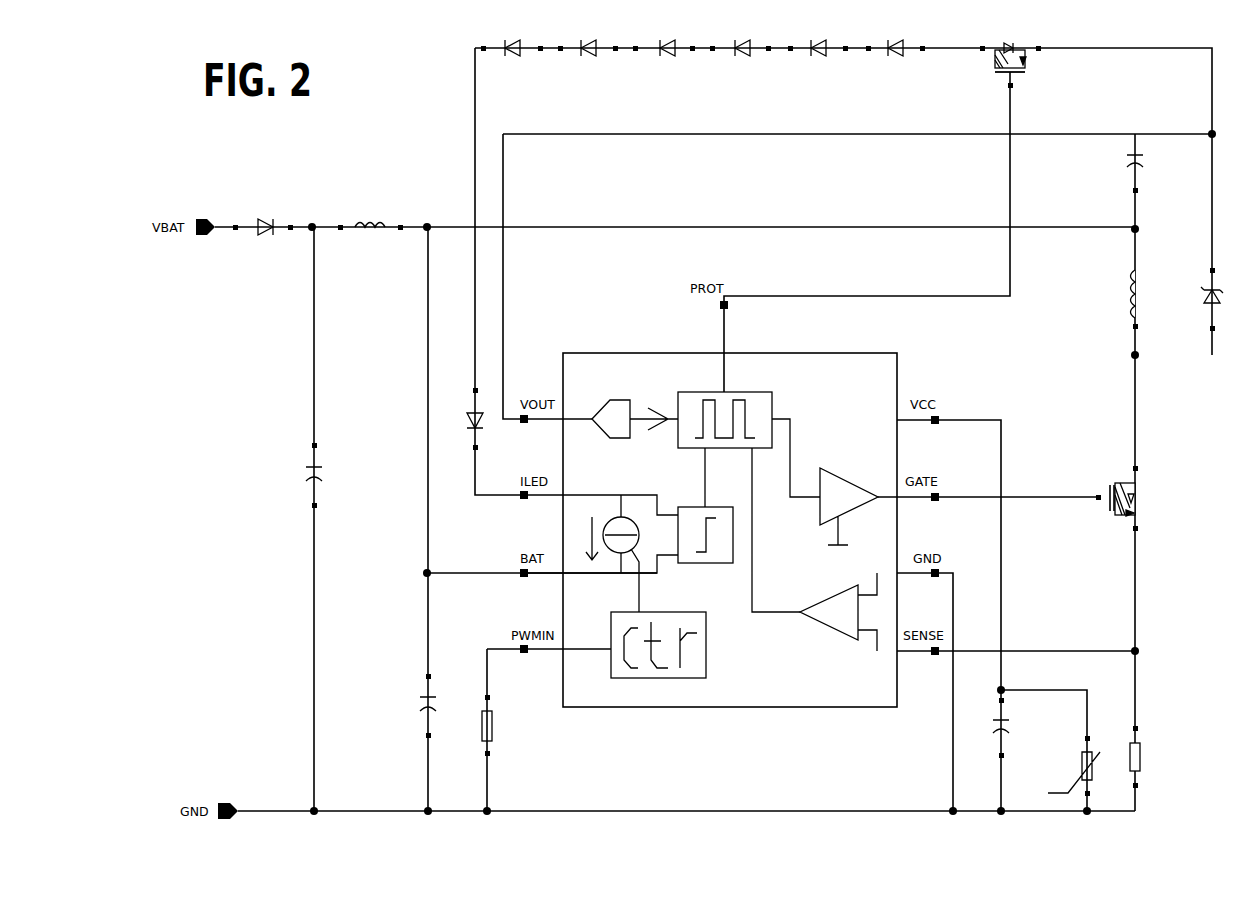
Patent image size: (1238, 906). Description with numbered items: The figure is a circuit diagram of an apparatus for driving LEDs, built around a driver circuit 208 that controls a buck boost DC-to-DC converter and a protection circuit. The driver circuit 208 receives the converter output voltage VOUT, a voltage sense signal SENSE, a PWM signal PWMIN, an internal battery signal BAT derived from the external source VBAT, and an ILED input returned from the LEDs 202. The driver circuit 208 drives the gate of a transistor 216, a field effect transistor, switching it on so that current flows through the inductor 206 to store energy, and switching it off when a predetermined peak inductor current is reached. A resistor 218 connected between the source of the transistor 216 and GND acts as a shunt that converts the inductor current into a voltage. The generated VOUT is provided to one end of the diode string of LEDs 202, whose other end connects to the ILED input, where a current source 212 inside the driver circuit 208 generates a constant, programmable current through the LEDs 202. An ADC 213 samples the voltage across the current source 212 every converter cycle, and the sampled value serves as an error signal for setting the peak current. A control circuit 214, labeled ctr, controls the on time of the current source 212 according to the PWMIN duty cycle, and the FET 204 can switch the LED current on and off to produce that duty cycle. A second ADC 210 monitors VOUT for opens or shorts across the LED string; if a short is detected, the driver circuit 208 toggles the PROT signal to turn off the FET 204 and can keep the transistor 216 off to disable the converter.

The LEDs 202 is at (682, 27).
The FET 204 is at (1028, 41).
The inductor 206 is at (1137, 271).
The driver circuit 208 is at (862, 354).
The ADC 210 is at (618, 398).
The current source 212 is at (625, 512).
The ADC 213 is at (698, 507).
The control circuit 214 is at (676, 612).
The transistor 216 is at (1137, 500).
The resistor 218 is at (1141, 752).